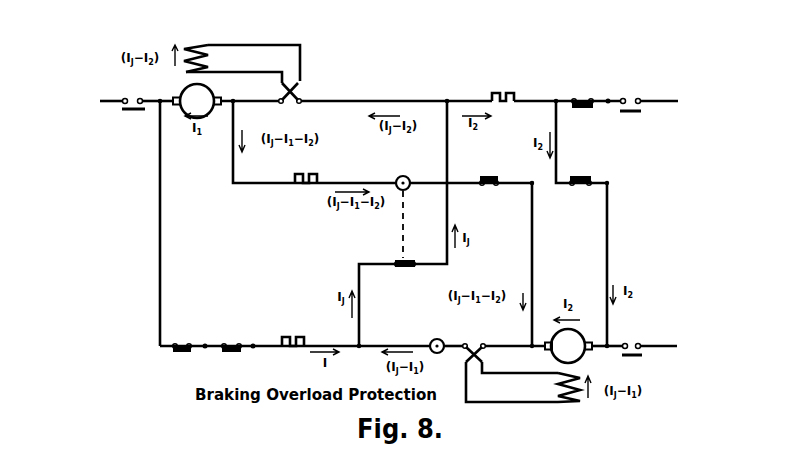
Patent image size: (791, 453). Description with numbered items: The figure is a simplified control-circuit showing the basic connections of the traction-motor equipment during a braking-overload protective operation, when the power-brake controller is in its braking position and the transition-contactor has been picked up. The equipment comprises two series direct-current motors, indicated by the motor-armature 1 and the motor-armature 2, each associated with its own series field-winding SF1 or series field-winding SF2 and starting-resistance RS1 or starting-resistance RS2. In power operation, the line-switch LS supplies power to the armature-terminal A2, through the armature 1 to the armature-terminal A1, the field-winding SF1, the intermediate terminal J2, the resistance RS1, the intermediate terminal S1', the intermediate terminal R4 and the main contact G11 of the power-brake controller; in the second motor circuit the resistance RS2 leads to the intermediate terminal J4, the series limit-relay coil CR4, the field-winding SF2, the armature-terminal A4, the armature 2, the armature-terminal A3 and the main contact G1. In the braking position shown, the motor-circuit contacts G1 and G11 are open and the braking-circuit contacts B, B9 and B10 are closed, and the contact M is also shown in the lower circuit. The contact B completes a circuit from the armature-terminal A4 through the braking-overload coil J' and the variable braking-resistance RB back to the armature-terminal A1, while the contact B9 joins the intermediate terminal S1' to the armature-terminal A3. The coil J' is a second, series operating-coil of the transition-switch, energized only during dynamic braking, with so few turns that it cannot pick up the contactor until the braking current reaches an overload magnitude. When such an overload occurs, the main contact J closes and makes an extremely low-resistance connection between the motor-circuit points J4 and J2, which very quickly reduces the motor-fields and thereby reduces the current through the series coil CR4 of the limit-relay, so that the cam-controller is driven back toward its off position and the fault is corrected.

The motor-armature 1 is at (197, 101).
The motor-armature 2 is at (568, 346).
The line-switch LS is at (131, 96).
The armature-terminal A2 is at (150, 218).
The armature-terminal A1 is at (229, 137).
The series field-winding SF1 is at (242, 65).
The intermediate terminal J2 is at (448, 92).
The starting-resistance RS1 is at (500, 87).
The intermediate terminal S1' is at (555, 92).
The intermediate terminal R4 is at (583, 95).
The main contact G11 is at (631, 105).
The braking-circuit contact B9 is at (580, 181).
The variable braking-resistance RB is at (306, 169).
The braking-overload coil J' is at (403, 208).
The braking-circuit contact B is at (489, 181).
The armature-terminal A4 is at (526, 264).
The transition-switch main contact J is at (405, 272).
The contact M is at (182, 339).
The braking-circuit contact B10 is at (231, 347).
The starting-resistance RS2 is at (291, 332).
The intermediate terminal J4 is at (364, 354).
The series limit-relay coil CR4 is at (437, 337).
The series field-winding SF2 is at (522, 380).
The armature-terminal A3 is at (603, 354).
The main contact G1 is at (634, 349).